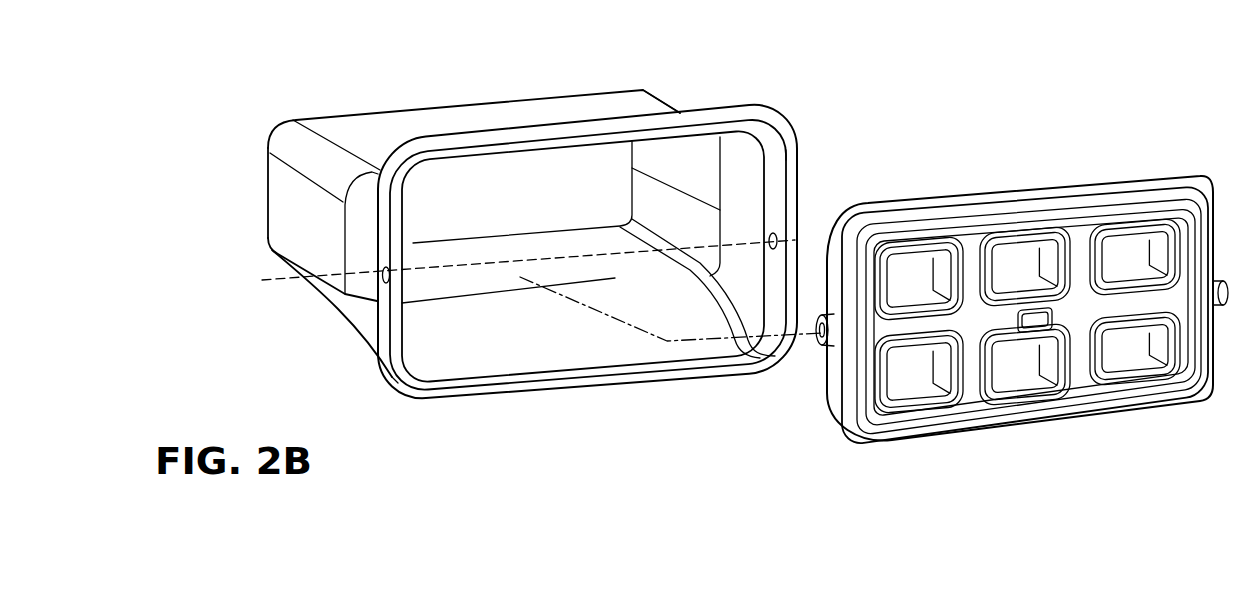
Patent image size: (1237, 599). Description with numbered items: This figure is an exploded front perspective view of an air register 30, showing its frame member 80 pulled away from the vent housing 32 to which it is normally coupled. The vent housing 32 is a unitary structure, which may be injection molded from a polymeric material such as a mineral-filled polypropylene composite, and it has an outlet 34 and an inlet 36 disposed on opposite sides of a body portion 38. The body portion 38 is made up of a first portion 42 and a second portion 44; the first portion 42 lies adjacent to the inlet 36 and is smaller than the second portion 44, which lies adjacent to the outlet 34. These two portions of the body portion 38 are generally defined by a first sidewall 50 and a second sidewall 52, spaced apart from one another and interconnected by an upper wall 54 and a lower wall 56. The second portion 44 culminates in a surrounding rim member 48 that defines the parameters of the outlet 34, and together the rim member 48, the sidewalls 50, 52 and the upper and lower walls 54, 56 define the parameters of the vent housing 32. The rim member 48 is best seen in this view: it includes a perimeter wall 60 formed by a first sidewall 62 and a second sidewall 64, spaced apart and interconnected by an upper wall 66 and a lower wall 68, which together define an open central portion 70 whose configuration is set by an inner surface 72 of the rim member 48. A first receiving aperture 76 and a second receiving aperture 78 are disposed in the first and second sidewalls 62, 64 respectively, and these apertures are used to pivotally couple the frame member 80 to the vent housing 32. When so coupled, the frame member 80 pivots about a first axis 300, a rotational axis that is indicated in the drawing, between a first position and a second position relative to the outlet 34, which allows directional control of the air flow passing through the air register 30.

The air register 30 is at (577, 13).
The vent housing 32 is at (702, 101).
The outlet 34 is at (617, 272).
The inlet 36 is at (450, 183).
The body portion 38 is at (285, 200).
The first portion 42 is at (342, 130).
The second portion 44 is at (758, 210).
The rim member 48 is at (392, 379).
The first sidewall 50 is at (312, 257).
The second sidewall 52 is at (723, 182).
The upper wall 54 is at (538, 112).
The lower wall 56 is at (513, 272).
The perimeter wall 60 is at (786, 146).
The first sidewall 62 is at (395, 300).
The second sidewall 64 is at (790, 288).
The upper wall 66 is at (600, 140).
The lower wall 68 is at (600, 388).
The open central portion 70 is at (560, 272).
The inner surface 72 is at (725, 362).
The first receiving aperture 76 is at (387, 287).
The second receiving aperture 78 is at (800, 243).
The frame member 80 is at (1038, 191).
The first axis 300 is at (577, 250).